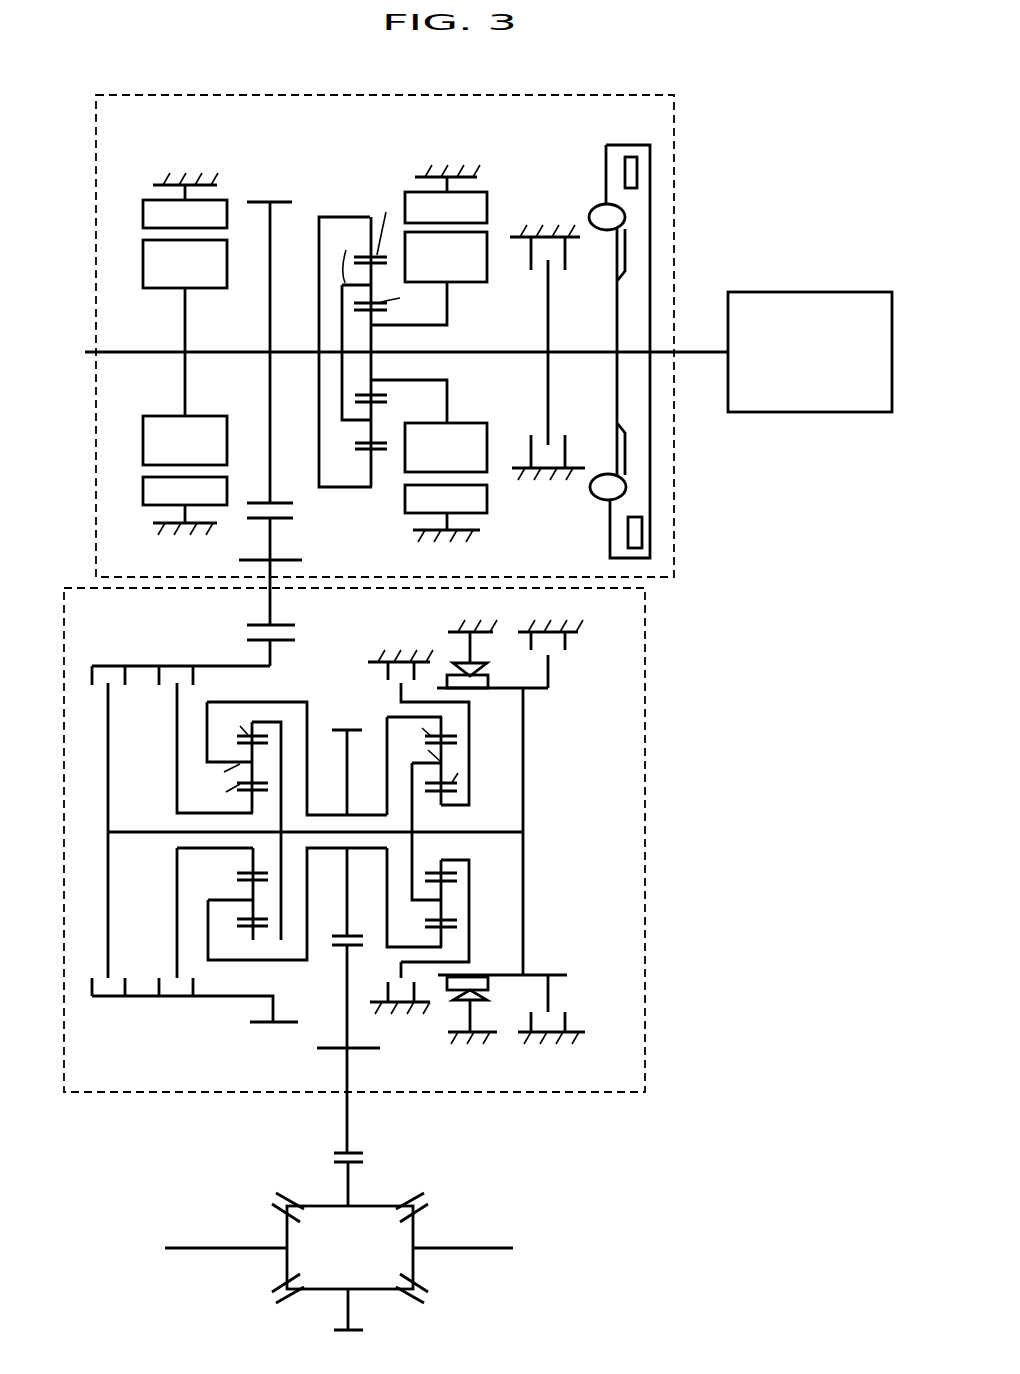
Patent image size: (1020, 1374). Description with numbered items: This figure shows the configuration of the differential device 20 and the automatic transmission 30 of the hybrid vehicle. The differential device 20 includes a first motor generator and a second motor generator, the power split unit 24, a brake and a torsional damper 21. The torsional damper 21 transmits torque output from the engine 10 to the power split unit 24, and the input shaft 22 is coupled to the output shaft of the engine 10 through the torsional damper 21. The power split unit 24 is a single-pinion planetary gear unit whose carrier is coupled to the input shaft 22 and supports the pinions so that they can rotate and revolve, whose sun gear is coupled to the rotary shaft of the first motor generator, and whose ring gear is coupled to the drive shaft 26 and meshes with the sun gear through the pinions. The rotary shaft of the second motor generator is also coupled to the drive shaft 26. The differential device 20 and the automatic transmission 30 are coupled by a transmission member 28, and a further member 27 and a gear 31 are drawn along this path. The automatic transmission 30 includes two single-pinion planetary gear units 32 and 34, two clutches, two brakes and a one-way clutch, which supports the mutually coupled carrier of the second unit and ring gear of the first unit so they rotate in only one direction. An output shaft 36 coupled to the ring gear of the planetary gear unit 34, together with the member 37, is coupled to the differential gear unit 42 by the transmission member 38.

The engine 10 is at (842, 292).
The differential device 20 is at (628, 96).
The torsional damper 21 is at (618, 145).
The input shaft 22 is at (510, 349).
The power split unit 24 is at (375, 175).
The drive shaft 26 is at (176, 317).
The transmission member 27 is at (270, 463).
The transmission member 28 is at (272, 540).
The automatic transmission 30 is at (645, 651).
The input gear 31 is at (272, 650).
The planetary gear unit 32 is at (255, 1039).
The planetary gear unit 34 is at (427, 1044).
The output shaft 36 is at (367, 850).
The output shaft 37 is at (345, 878).
The transmission member 38 is at (346, 1004).
The differential gear unit 42 is at (398, 1190).